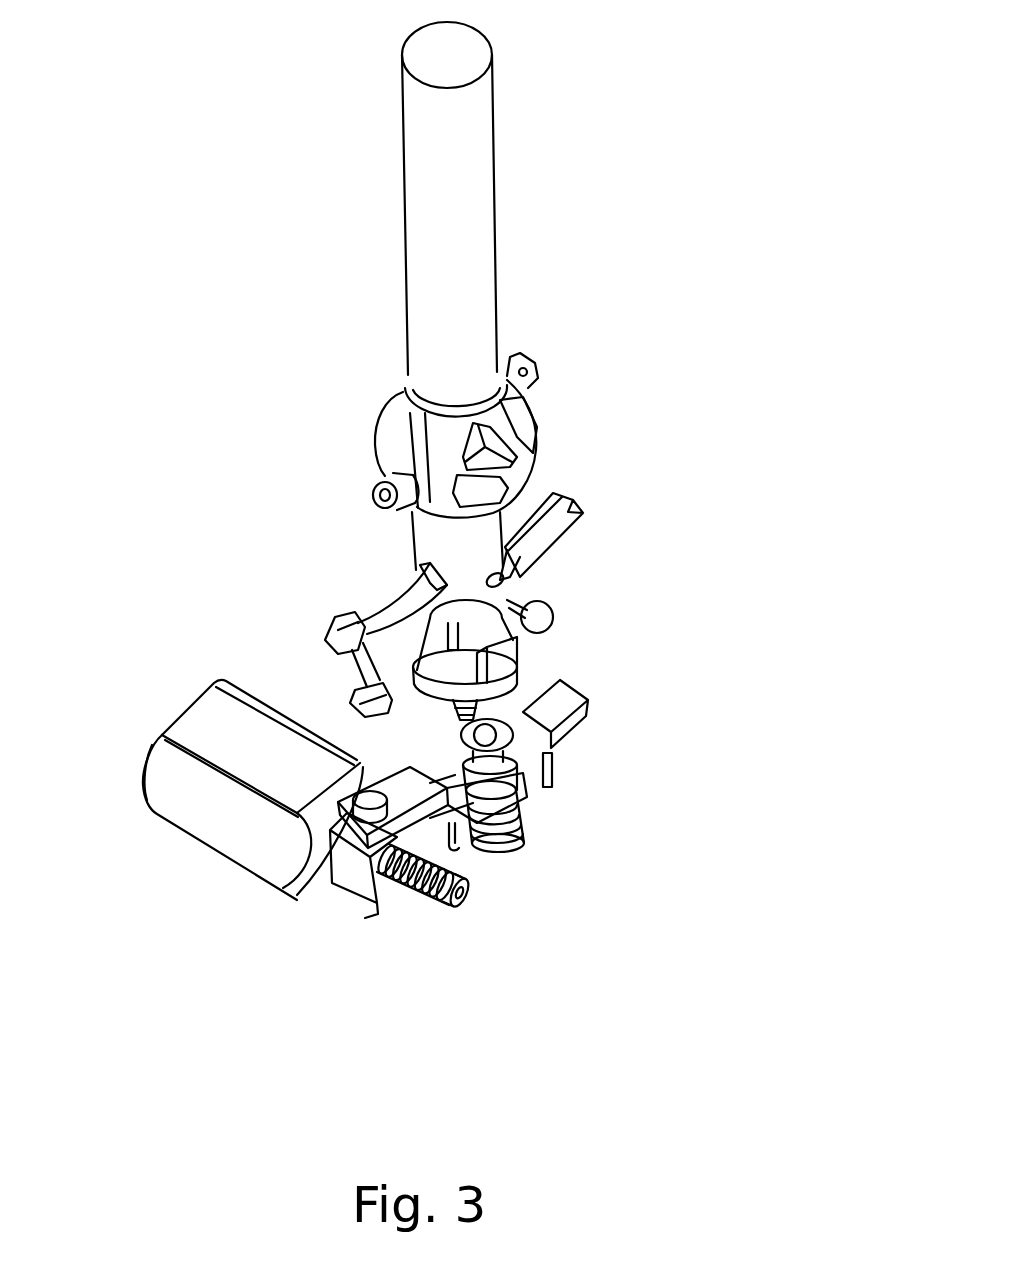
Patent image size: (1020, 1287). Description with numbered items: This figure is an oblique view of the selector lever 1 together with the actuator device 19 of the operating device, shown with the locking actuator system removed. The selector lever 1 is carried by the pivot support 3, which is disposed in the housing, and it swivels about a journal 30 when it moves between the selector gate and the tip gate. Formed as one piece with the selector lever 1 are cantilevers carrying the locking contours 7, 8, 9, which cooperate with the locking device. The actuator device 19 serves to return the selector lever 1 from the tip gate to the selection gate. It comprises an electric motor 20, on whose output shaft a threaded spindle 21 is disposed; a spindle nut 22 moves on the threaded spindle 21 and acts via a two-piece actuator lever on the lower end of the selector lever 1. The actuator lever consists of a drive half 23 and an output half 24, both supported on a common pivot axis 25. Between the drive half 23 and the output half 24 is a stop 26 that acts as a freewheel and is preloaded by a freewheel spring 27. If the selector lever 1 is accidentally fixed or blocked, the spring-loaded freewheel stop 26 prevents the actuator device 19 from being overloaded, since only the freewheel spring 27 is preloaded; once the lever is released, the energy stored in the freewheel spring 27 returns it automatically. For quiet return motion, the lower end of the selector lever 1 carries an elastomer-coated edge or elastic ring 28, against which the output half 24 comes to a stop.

The selector lever 1 is at (450, 163).
The pivot support 3 is at (391, 431).
The journal 30 is at (523, 370).
The locking contour 9 is at (580, 503).
The locking contour 8 is at (342, 637).
The locking contour 7 is at (372, 698).
The elastic ring 28 is at (513, 680).
The output half 24 is at (557, 712).
The pivot axis 25 is at (485, 735).
The freewheel stop 26 is at (490, 787).
The freewheel spring 27 is at (540, 792).
The drive half 23 is at (410, 787).
The electric motor 20 is at (233, 817).
The spindle nut 22 is at (350, 865).
The threaded spindle 21 is at (430, 909).
The actuator device 19 is at (684, 941).